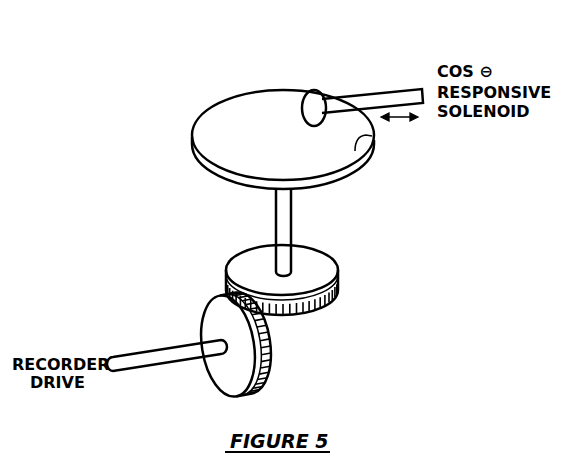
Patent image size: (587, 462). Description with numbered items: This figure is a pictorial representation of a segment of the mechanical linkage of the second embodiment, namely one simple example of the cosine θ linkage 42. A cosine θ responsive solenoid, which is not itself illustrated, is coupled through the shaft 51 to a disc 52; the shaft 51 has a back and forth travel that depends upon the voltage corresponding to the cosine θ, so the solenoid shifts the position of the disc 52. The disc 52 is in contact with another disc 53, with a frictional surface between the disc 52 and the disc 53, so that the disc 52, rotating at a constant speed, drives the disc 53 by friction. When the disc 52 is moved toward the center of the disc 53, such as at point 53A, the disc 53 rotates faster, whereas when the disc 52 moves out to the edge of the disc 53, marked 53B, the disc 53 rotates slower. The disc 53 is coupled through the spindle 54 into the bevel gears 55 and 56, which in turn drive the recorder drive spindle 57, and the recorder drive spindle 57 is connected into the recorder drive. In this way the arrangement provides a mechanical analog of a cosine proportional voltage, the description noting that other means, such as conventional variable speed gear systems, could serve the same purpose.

The cosine θ linkage 42 is at (200, 83).
The shaft 51 is at (379, 95).
The disc 52 is at (327, 101).
The disc 53 is at (353, 175).
The point near center of disc 53A is at (285, 132).
The edge of disc 53B is at (372, 136).
The spindle 54 is at (292, 222).
The bevel gear 55 is at (305, 312).
The bevel gear 56 is at (268, 375).
The recorder drive spindle 57 is at (132, 353).